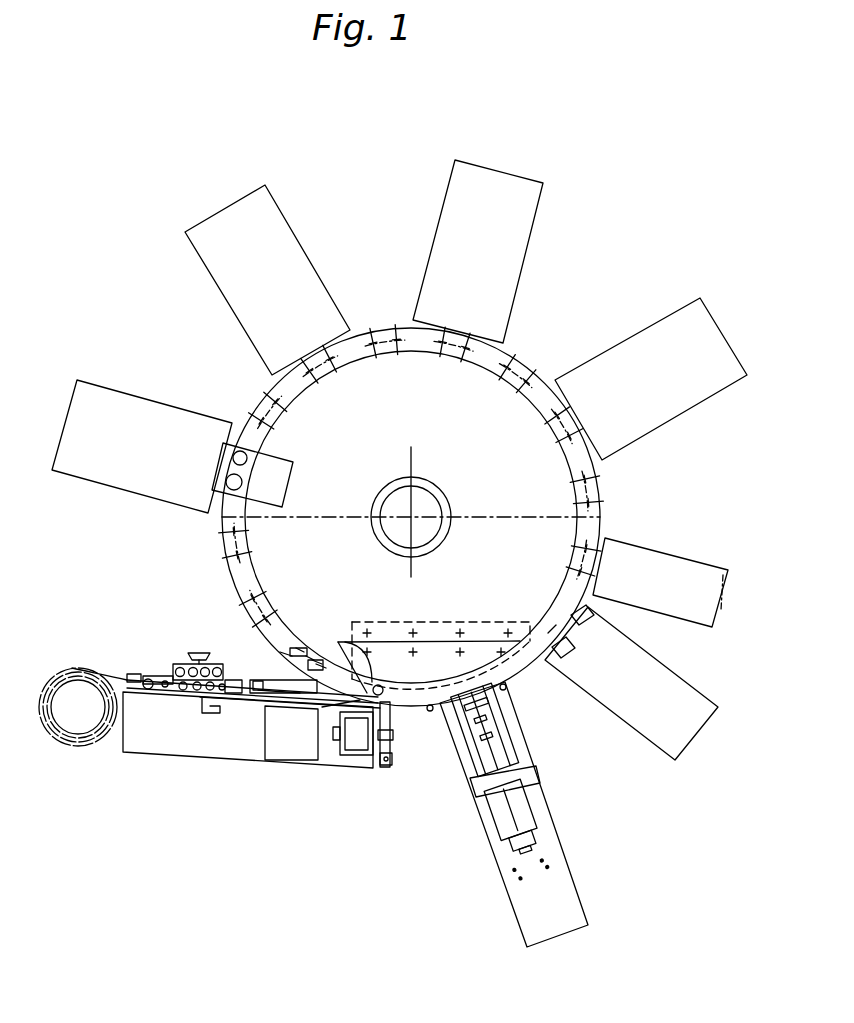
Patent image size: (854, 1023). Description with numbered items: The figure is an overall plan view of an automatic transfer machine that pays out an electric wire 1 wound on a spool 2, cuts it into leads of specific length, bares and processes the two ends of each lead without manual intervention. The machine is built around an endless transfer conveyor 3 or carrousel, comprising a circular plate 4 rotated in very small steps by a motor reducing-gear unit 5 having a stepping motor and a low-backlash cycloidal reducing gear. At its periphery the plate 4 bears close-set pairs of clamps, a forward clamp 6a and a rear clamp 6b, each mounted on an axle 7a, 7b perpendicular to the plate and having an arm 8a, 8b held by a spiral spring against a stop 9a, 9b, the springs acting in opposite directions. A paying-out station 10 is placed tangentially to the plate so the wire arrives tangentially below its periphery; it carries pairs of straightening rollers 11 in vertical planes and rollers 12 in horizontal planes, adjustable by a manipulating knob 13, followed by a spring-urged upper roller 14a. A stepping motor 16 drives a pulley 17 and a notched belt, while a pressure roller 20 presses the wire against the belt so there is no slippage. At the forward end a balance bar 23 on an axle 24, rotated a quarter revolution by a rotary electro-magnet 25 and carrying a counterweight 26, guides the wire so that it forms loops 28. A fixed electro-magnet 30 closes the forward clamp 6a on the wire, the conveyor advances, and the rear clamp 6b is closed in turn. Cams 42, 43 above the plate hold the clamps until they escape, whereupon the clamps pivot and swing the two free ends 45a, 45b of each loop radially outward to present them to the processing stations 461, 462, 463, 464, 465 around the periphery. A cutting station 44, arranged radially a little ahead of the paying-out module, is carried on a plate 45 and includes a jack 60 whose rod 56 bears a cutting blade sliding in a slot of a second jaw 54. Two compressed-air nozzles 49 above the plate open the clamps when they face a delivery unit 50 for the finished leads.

The electric wire 1 is at (104, 670).
The spool 2 is at (52, 744).
The transfer conveyor 3 is at (226, 543).
The circular plate 4 is at (547, 538).
The motor reducing-gear unit 5 is at (435, 506).
The forward clamp 6a is at (322, 707).
The rear clamp 6b is at (291, 649).
The axle 7a is at (318, 661).
The axle 7b is at (287, 652).
The arm 8a is at (320, 665).
The arm 8b is at (300, 650).
The stop 9a is at (324, 668).
The stop 9b is at (310, 652).
The paying-out station 10 is at (172, 748).
The pairs of rollers 11 is at (132, 676).
The pairs of rollers 12 is at (150, 674).
The manipulating knob 13 is at (188, 666).
The upper roller 14a is at (215, 678).
The stepping motor 16 is at (278, 748).
The pulley 17 is at (282, 683).
The pressure roller 20 is at (258, 688).
The balance bar 23 is at (391, 724).
The axle 24 is at (392, 765).
The rotary electro-magnet 25 is at (348, 748).
The counterweight 26 is at (385, 769).
The loop 28 is at (554, 631).
The electro-magnet 30 is at (379, 685).
The cam 42 is at (477, 670).
The cam 43 is at (405, 700).
The cutting station 44 is at (580, 873).
The plate 45 is at (473, 772).
The wire end 45a is at (561, 658).
The wire end 45b is at (582, 630).
The processing station 461 is at (683, 733).
The processing station 462 is at (708, 590).
The processing station 463 is at (717, 348).
The processing station 464 is at (492, 181).
The processing station 465 is at (218, 218).
The nozzles 49 is at (281, 481).
The delivery unit 50 is at (75, 421).
The second jaw 54 is at (483, 701).
The rod 56 is at (490, 734).
The jack 60 is at (517, 803).